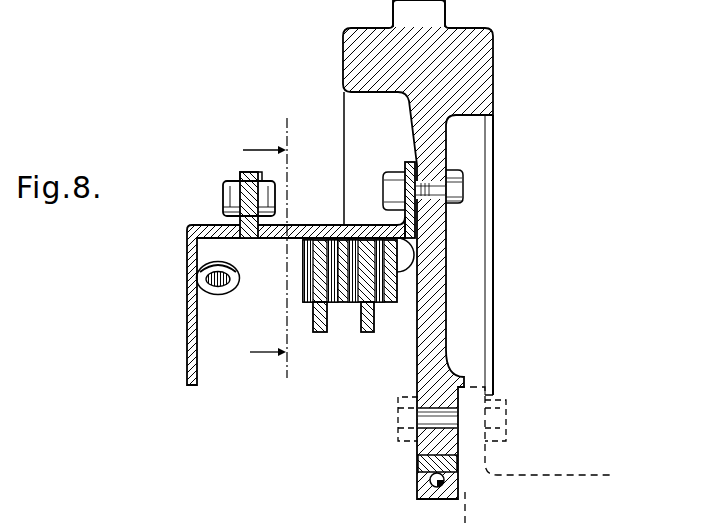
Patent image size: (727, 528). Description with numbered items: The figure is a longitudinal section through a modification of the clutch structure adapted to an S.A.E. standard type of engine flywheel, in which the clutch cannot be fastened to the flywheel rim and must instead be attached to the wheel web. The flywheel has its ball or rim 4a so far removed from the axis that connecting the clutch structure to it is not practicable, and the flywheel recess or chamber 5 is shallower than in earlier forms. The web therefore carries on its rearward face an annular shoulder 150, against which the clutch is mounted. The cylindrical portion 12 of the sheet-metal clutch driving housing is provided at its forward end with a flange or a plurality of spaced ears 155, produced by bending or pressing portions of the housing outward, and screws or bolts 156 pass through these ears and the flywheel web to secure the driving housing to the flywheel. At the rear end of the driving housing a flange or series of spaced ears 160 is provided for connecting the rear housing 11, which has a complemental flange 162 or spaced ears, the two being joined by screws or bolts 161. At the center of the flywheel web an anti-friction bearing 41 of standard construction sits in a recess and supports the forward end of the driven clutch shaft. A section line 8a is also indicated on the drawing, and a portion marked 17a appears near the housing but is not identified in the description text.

The flywheel rim 4a is at (457, 53).
The flywheel recess 5 is at (383, 131).
The section line 8a is at (274, 247).
The rear housing 11 is at (187, 237).
The cylindrical portion of clutch driving housing 12 is at (306, 225).
The detent lug 17a is at (403, 268).
The anti-friction bearing 41 is at (418, 491).
The annular shoulder 150 is at (412, 158).
The spaced ears 155 is at (445, 168).
The screws or bolts 156 is at (435, 187).
The spaced ears 160 is at (258, 172).
The screws or bolts 161 is at (230, 196).
The flange 162 is at (240, 172).